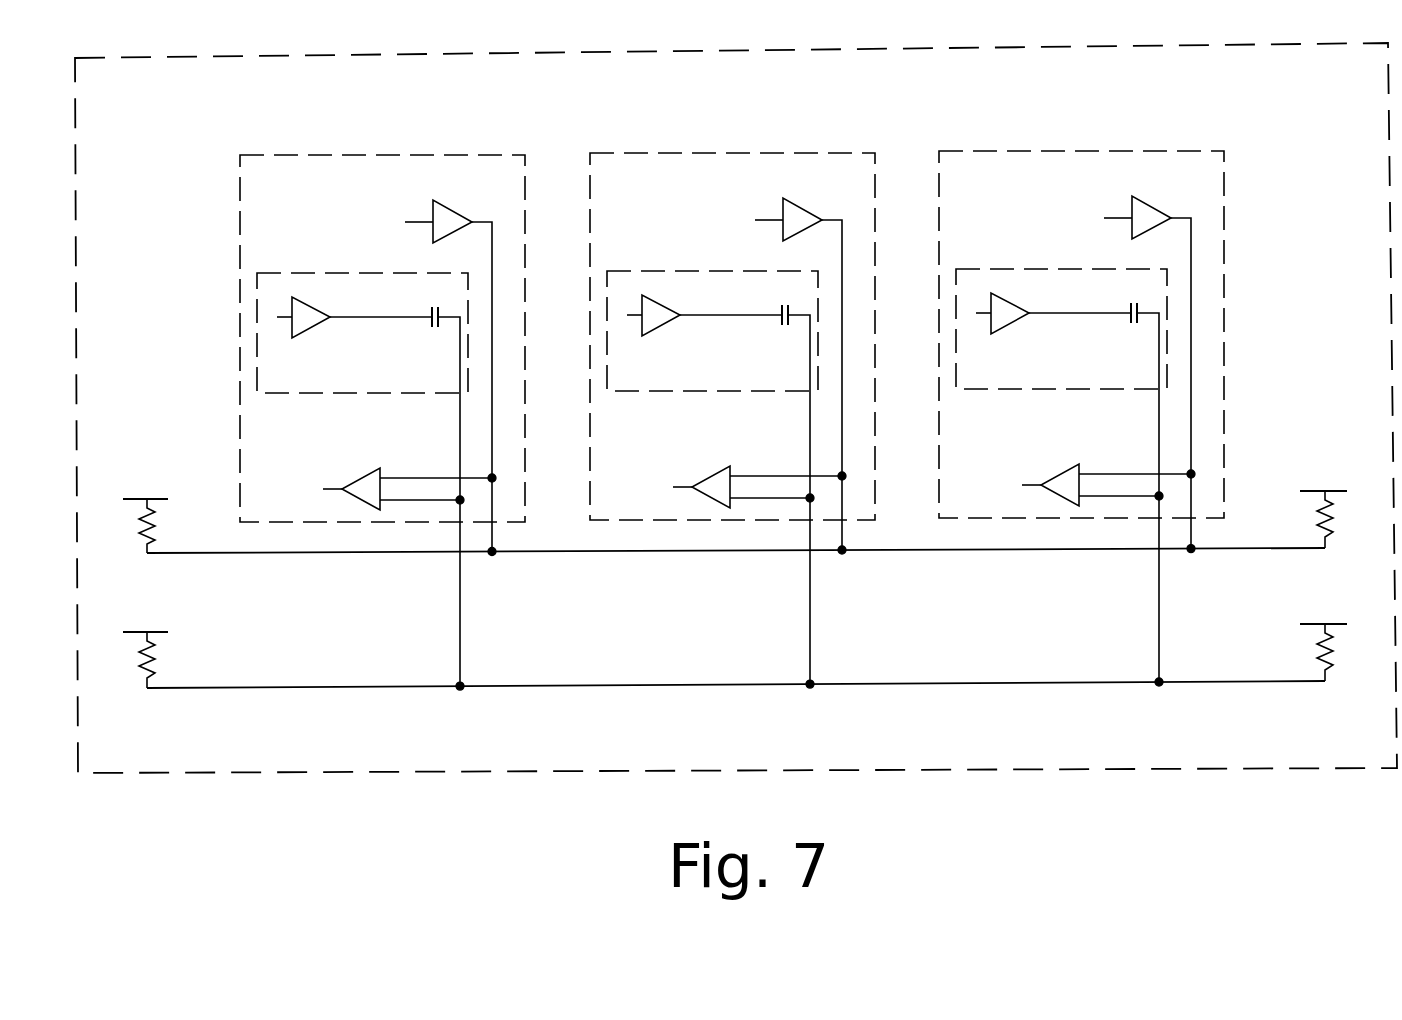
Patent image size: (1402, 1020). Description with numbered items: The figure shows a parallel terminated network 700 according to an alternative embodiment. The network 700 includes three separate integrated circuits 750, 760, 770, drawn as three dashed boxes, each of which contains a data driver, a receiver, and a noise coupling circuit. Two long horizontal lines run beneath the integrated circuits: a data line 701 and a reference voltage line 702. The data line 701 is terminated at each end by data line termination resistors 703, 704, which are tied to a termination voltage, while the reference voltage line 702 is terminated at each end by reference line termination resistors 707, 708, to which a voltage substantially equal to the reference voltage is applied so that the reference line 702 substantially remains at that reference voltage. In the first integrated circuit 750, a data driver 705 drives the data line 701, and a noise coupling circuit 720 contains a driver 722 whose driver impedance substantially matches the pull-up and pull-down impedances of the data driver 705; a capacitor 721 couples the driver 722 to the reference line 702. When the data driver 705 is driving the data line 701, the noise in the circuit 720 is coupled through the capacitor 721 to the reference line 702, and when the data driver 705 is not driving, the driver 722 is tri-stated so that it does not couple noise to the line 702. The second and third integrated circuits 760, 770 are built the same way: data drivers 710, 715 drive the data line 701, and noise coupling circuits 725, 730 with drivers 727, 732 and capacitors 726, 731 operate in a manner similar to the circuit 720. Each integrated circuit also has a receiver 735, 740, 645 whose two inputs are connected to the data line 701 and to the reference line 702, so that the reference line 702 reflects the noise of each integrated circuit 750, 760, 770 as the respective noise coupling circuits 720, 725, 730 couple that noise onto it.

The network 700 is at (403, 773).
The data line 701 is at (580, 552).
The reference voltage line 702 is at (578, 684).
The data line termination resistor 703 is at (156, 528).
The data line termination resistor 704 is at (1315, 520).
The data driver 705 is at (448, 204).
The reference line termination resistor 707 is at (156, 661).
The reference line termination resistor 708 is at (1315, 652).
The data driver 710 is at (814, 365).
The data driver 715 is at (1163, 363).
The noise coupling circuit 720 is at (337, 396).
The capacitor 721 is at (431, 324).
The driver 722 is at (305, 326).
The noise coupling circuit 725 is at (712, 353).
The capacitor 726 is at (781, 494).
The driver 727 is at (704, 332).
The noise coupling circuit 730 is at (1061, 351).
The capacitor 731 is at (1130, 492).
The driver 732 is at (1053, 330).
The receiver 735 is at (365, 476).
The receiver 740 is at (744, 479).
The receiver 645 is at (1093, 477).
The integrated circuit 750 is at (356, 154).
The integrated circuit 760 is at (732, 318).
The integrated circuit 770 is at (1081, 316).